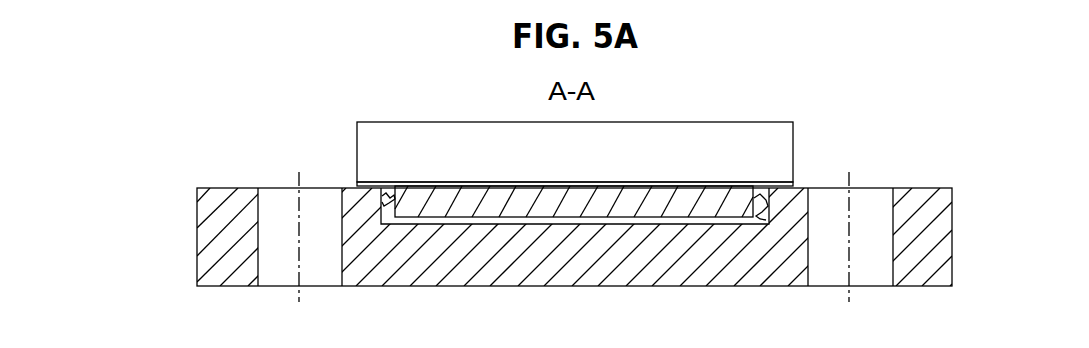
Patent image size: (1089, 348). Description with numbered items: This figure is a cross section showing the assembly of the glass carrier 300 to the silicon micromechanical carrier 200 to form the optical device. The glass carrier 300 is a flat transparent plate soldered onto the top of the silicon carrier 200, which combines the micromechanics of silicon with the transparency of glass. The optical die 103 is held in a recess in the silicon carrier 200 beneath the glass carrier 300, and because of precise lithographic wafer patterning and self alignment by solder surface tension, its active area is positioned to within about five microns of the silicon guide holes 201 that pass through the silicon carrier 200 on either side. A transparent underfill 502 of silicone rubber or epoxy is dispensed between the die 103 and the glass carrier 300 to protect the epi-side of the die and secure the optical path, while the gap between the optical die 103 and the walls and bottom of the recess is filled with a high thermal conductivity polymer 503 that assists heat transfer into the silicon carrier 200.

The silicon micromechanical carrier 200 is at (519, 253).
The silicon guide holes 201 is at (587, 188).
The glass carrier 300 is at (575, 128).
The transparent underfill 502 is at (538, 159).
The optical die 103 is at (658, 148).
The high thermal conductivity polymer 503 is at (635, 262).